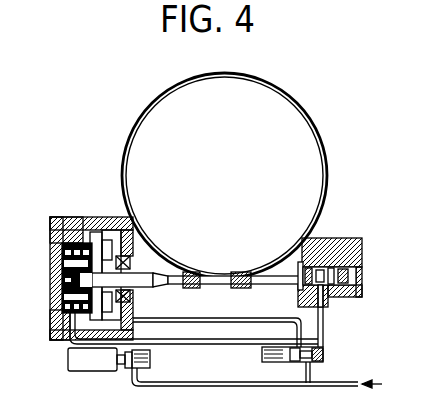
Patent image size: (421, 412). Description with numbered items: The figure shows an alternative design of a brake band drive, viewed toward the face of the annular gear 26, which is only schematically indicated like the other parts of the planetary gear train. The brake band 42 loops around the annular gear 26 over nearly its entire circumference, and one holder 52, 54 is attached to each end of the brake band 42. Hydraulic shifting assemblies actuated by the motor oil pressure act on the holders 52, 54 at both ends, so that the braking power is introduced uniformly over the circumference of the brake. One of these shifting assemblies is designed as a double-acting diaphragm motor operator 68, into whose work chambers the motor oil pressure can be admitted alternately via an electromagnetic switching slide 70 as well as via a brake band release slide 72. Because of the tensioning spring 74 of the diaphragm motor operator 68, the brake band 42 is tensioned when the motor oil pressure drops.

The annular gear 26 is at (304, 143).
The brake band 42 is at (295, 98).
The double-acting diaphragm motor operator 68 is at (86, 205).
The tensioning spring 74 is at (62, 247).
The holder 54 is at (190, 285).
The holder 52 is at (240, 285).
The brake band release slide 72 is at (323, 354).
The electromagnetic switching slide 70 is at (88, 358).